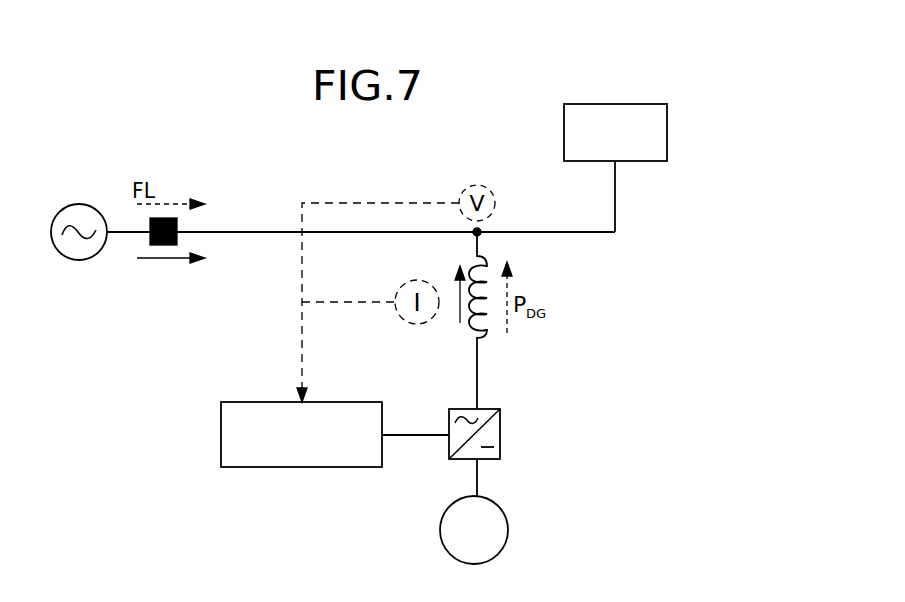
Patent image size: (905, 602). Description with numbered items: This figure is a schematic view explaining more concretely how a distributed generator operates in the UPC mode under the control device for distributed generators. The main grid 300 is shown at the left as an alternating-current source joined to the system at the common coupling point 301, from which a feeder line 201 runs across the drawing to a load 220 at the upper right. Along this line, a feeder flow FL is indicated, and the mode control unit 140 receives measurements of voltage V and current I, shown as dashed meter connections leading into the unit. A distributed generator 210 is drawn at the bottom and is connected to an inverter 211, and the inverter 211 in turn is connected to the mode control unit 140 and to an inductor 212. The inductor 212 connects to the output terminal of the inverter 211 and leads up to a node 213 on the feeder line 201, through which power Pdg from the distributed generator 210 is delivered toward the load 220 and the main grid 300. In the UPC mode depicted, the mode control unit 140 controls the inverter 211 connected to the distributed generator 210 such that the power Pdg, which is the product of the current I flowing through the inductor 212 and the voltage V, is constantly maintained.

The mode control unit 140 is at (221, 432).
The power line 201 is at (230, 230).
The distributed generator 210 is at (509, 530).
The inverter 211 is at (503, 435).
The inductor 212 is at (488, 318).
The connection node 213 is at (475, 236).
The load 220 is at (668, 130).
The main grid 300 is at (80, 203).
The common coupling point 301 is at (165, 218).